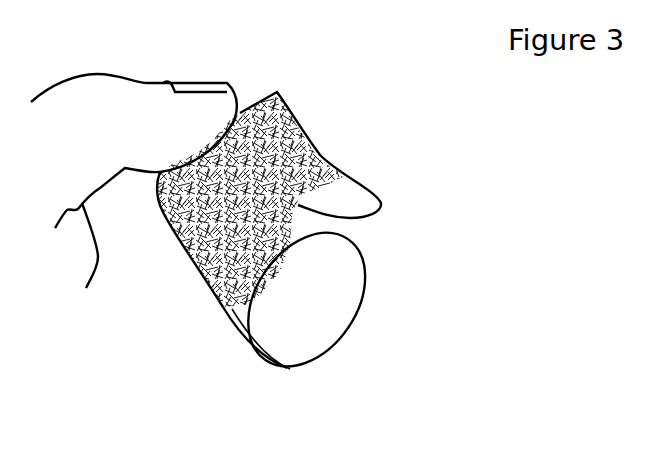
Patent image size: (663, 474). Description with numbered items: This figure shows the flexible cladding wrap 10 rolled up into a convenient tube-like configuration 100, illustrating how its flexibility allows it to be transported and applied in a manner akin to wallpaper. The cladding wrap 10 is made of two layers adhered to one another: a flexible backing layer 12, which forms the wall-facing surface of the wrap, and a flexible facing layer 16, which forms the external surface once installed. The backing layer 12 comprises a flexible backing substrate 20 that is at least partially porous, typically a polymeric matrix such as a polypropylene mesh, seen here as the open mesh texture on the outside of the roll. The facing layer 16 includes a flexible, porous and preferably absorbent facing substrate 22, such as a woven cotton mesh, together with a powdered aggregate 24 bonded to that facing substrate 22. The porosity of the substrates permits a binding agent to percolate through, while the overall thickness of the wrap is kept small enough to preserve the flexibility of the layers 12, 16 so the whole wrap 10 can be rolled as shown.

The flexible cladding wrap 10 is at (432, 207).
The tube-like configuration 100 is at (350, 231).
The flexible backing layer 12 is at (290, 139).
The flexible backing substrate 20 is at (275, 231).
The flexible facing layer 16 is at (230, 236).
The flexible facing substrate 22 is at (288, 202).
The powdered aggregate 24 is at (232, 293).